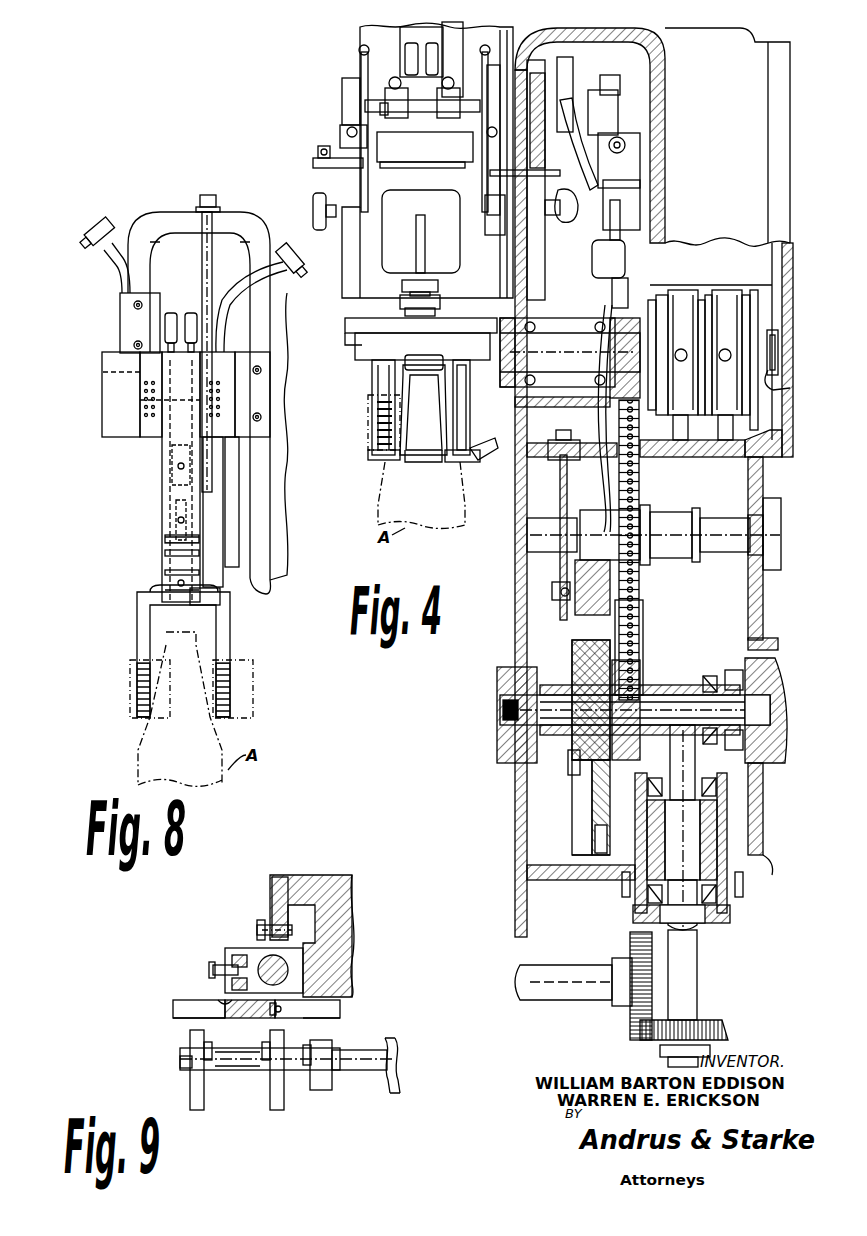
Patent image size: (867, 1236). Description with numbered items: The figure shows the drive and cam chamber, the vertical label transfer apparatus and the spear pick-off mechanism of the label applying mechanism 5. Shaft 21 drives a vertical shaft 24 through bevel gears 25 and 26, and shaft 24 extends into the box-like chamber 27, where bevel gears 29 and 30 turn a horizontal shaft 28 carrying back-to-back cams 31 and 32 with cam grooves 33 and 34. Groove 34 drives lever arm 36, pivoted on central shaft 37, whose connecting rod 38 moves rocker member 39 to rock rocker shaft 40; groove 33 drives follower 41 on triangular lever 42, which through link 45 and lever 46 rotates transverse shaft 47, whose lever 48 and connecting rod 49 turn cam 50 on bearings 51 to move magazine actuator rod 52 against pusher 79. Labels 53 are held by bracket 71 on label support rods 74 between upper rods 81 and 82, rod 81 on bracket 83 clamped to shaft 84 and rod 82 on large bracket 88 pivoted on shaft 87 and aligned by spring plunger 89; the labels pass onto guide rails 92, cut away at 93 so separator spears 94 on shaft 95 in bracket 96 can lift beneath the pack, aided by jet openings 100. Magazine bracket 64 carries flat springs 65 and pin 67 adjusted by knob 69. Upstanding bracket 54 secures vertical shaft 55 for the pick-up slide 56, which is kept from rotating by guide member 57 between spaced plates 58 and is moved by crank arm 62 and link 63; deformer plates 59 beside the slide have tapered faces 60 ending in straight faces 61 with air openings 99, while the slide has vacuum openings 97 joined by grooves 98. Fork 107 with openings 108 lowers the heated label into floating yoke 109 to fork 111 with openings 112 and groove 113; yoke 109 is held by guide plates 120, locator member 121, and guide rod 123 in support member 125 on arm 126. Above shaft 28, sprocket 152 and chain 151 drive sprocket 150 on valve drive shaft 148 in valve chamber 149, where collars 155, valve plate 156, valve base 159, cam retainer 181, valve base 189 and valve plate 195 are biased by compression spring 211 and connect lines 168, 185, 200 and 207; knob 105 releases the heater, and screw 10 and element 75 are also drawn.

In FIG. 4, the label applying mechanism 5 is at (339, 348).
In FIG. 9, the adjusting screw 10 is at (311, 1032).
In FIG. 4, the shaft 21 is at (572, 968).
In FIG. 4, the vertical shaft 24 is at (700, 950).
In FIG. 4, the bevel gear 25 is at (630, 1010).
In FIG. 4, the bevel gear 26 is at (648, 1045).
In FIG. 4, the box-like chamber 27 is at (767, 96).
In FIG. 4, the horizontal shaft 28 is at (690, 684).
In FIG. 4, the bevel gear 29 is at (718, 700).
In FIG. 4, the bevel gear 30 is at (740, 658).
In FIG. 4, the disc-like cam 31 is at (572, 830).
In FIG. 4, the disc-like cam 32 is at (623, 785).
In FIG. 4, the cam groove 33 is at (572, 782).
In FIG. 4, the cam groove 34 is at (615, 815).
In FIG. 4, the lever arm 36 is at (606, 490).
In FIG. 4, the central shaft 37 is at (705, 520).
In FIG. 4, the connecting rod 38 is at (592, 258).
In FIG. 4, the rocker member 39 is at (630, 210).
In FIG. 4, the rocker shaft 40 is at (645, 160).
In FIG. 9, the rocker shaft 40 is at (378, 1035).
In FIG. 4, the roller-type follower 41 is at (565, 605).
In FIG. 4, the lever 42 is at (560, 567).
In FIG. 4, the link 45 is at (557, 70).
In FIG. 4, the lever 46 is at (575, 52).
In FIG. 4, the transverse horizontal shaft 47 is at (635, 100).
In FIG. 4, the lever 48 is at (606, 88).
In FIG. 4, the connecting rod 49 is at (566, 222).
In FIG. 4, the cam 50 is at (592, 144).
In FIG. 9, the bearings 51 is at (345, 908).
In FIG. 4, the magazine actuator rod 52 is at (500, 205).
In FIG. 4, the labels 53 is at (365, 418).
In FIG. 8, the labels 53 is at (235, 672).
In FIG. 4, the upstanding bracket 54 is at (514, 30).
In FIG. 8, the upstanding bracket 54 is at (262, 215).
In FIG. 4, the vertical shaft 55 is at (475, 38).
In FIG. 8, the vertical shaft 55 is at (207, 200).
In FIG. 9, the vertical shaft 55 is at (288, 970).
In FIG. 4, the label pick-up slide 56 is at (398, 302).
In FIG. 8, the label pick-up slide 56 is at (163, 495).
In FIG. 9, the label pick-up slide 56 is at (218, 1000).
In FIG. 9, the vertical guide member 57 is at (272, 890).
In FIG. 9, the spaced plates 58 is at (262, 920).
In FIG. 8, the deformer plates 59 is at (115, 437).
In FIG. 9, the deformer plates 59 is at (173, 1000).
In FIG. 8, the rear wall or face 60 is at (210, 370).
In FIG. 9, the rear wall or face 60 is at (258, 1018).
In FIG. 8, the straight face 61 is at (103, 378).
In FIG. 9, the straight face 61 is at (178, 1018).
In FIG. 8, the crank arm 62 is at (172, 472).
In FIG. 8, the link 63 is at (175, 514).
In FIG. 9, the link 63 is at (240, 950).
In FIG. 4, the bracket 64 is at (478, 240).
In FIG. 4, the flat springs 65 is at (425, 168).
In FIG. 4, the vertical pin 67 is at (440, 300).
In FIG. 4, the knob 69 is at (445, 310).
In FIG. 4, the bracket 71 is at (372, 230).
In FIG. 4, the label support rods 74 is at (440, 86).
In FIG. 4, the block 75 is at (438, 110).
In FIG. 4, the pusher 79 is at (490, 174).
In FIG. 4, the upper rod 81 is at (490, 66).
In FIG. 4, the upper rod 82 is at (361, 65).
In FIG. 4, the bracket 83 is at (493, 98).
In FIG. 4, the transverse shaft 84 is at (487, 132).
In FIG. 4, the shaft 87 is at (348, 130).
In FIG. 4, the large bracket 88 is at (342, 100).
In FIG. 4, the spring plunger 89 is at (316, 152).
In FIG. 9, the guide rails 92 is at (222, 1094).
In FIG. 9, the cut away 93 is at (232, 1046).
In FIG. 9, the label separator spear 94 is at (190, 1046).
In FIG. 9, the shaft 95 is at (180, 1064).
In FIG. 9, the bracket 96 is at (322, 1090).
In FIG. 8, the vacuum air flow openings 97 is at (165, 540).
In FIG. 8, the grooves 98 is at (165, 573).
In FIG. 8, the air flow openings 99 is at (125, 412).
In FIG. 9, the jet opening 100 is at (298, 1007).
In FIG. 4, the knob 105 is at (318, 194).
In FIG. 4, the vertical fork 107 is at (378, 438).
In FIG. 8, the vertical fork 107 is at (137, 708).
In FIG. 4, the air flow openings 108 is at (372, 457).
In FIG. 8, the air flow openings 108 is at (228, 702).
In FIG. 4, the floating yoke 109 is at (352, 365).
In FIG. 4, the fork 111 is at (378, 398).
In FIG. 4, the vacuum air flow openings 112 is at (440, 430).
In FIG. 4, the vertical groove 113 is at (430, 455).
In FIG. 4, the guide plates 120 is at (555, 357).
In FIG. 4, the locator member 121 is at (436, 375).
In FIG. 4, the guide rod 123 is at (470, 388).
In FIG. 4, the support member 125 is at (470, 465).
In FIG. 4, the arm 126 is at (490, 452).
In FIG. 4, the valve drive shaft 148 is at (578, 335).
In FIG. 4, the valve chamber 149 is at (748, 283).
In FIG. 4, the sprocket 150 is at (603, 293).
In FIG. 4, the chain 151 is at (640, 612).
In FIG. 4, the sprocket 152 is at (640, 665).
In FIG. 4, the collars 155 is at (650, 318).
In FIG. 4, the annular valve plate 156 is at (757, 320).
In FIG. 4, the annular valve base 159 is at (740, 272).
In FIG. 8, the line 168 is at (115, 215).
In FIG. 4, the cam retainer 181 is at (705, 430).
In FIG. 8, the line 185 is at (92, 220).
In FIG. 4, the vacuum valve base 189 is at (684, 290).
In FIG. 4, the annular valve plate 195 is at (662, 430).
In FIG. 4, the line 200 is at (408, 44).
In FIG. 8, the line 200 is at (170, 312).
In FIG. 4, the line 207 is at (425, 60).
In FIG. 8, the line 207 is at (190, 312).
In FIG. 4, the compression spring 211 is at (798, 382).